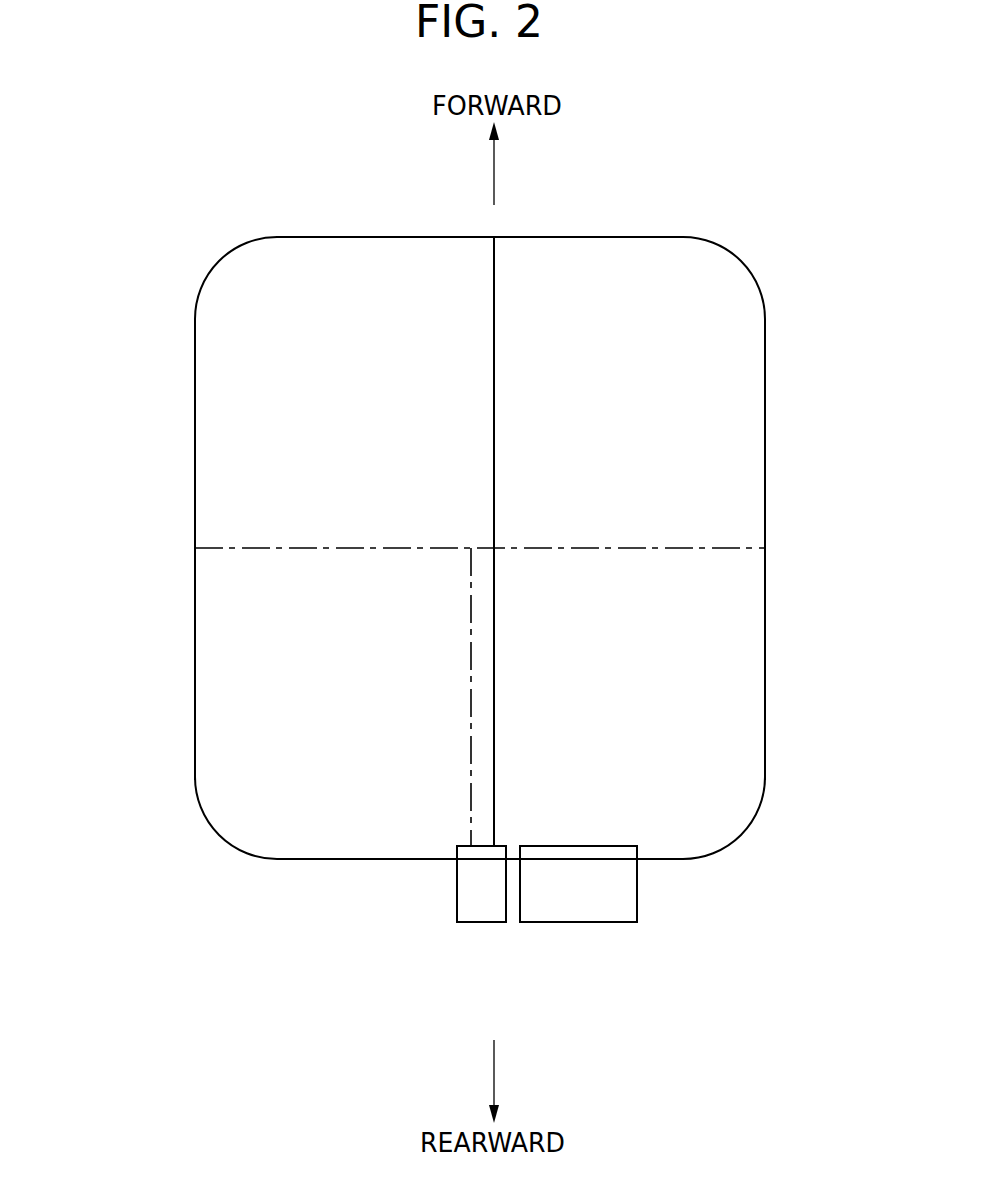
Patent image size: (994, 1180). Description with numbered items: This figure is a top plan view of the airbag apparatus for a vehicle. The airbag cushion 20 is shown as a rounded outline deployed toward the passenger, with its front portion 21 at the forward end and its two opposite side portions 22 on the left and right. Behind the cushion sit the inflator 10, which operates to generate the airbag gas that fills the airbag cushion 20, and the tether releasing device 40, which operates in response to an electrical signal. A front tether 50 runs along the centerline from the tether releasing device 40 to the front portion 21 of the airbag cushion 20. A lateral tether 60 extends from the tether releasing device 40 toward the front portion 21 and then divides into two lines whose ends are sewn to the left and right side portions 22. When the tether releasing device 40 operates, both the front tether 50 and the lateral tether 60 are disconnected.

The inflator 10 is at (577, 908).
The airbag cushion 20 is at (767, 328).
The front portion 21 is at (444, 237).
The side portions 22 is at (195, 473).
The tether releasing device 40 is at (490, 908).
The front tether 50 is at (497, 470).
The lateral tether 60 is at (471, 668).